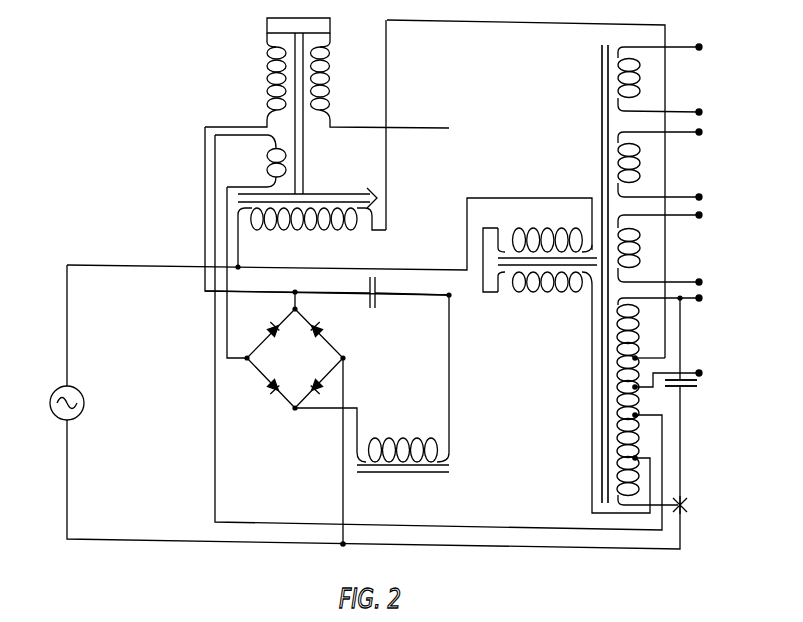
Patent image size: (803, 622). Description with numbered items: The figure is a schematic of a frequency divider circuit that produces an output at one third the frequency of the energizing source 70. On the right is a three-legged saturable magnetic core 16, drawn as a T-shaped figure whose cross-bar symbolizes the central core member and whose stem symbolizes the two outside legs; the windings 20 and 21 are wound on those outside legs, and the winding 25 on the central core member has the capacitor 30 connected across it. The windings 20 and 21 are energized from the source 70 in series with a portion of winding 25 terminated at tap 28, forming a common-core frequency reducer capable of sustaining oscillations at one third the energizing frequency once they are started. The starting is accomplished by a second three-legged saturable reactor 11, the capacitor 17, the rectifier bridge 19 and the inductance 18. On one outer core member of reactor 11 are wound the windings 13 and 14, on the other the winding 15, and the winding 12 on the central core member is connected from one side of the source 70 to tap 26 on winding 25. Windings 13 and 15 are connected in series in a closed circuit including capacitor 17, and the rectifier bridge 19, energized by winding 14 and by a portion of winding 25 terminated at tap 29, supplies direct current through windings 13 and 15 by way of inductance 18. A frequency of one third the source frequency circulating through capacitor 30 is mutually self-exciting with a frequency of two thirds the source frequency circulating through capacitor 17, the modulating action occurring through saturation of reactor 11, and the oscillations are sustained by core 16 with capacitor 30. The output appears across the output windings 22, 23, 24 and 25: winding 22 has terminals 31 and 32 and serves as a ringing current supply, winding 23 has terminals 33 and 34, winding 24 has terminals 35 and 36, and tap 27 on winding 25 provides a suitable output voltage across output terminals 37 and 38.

The three-legged saturable reactor 11 is at (370, 184).
The winding 12 is at (302, 234).
The winding 13 is at (267, 91).
The winding 14 is at (264, 168).
The winding 15 is at (330, 90).
The three-legged saturable magnetic core 16 is at (600, 131).
The capacitor 17 is at (372, 272).
The inductance 18 is at (407, 478).
The rectifier bridge 19 is at (333, 378).
The winding 20 is at (529, 228).
The winding 21 is at (537, 294).
The output winding 22 is at (641, 97).
The output winding 23 is at (637, 172).
The output winding 24 is at (636, 243).
The winding 25 is at (658, 327).
The tap 26 is at (642, 358).
The tap 27 is at (640, 386).
The tap 28 is at (640, 419).
The tap 29 is at (642, 444).
The capacitor 30 is at (683, 389).
The terminal 31 is at (700, 46).
The terminal 32 is at (702, 104).
The terminal 33 is at (702, 135).
The terminal 34 is at (702, 187).
The terminal 35 is at (702, 218).
The terminal 36 is at (702, 272).
The output terminal 37 is at (702, 301).
The output terminal 38 is at (702, 366).
The AC voltage source 70 is at (72, 417).